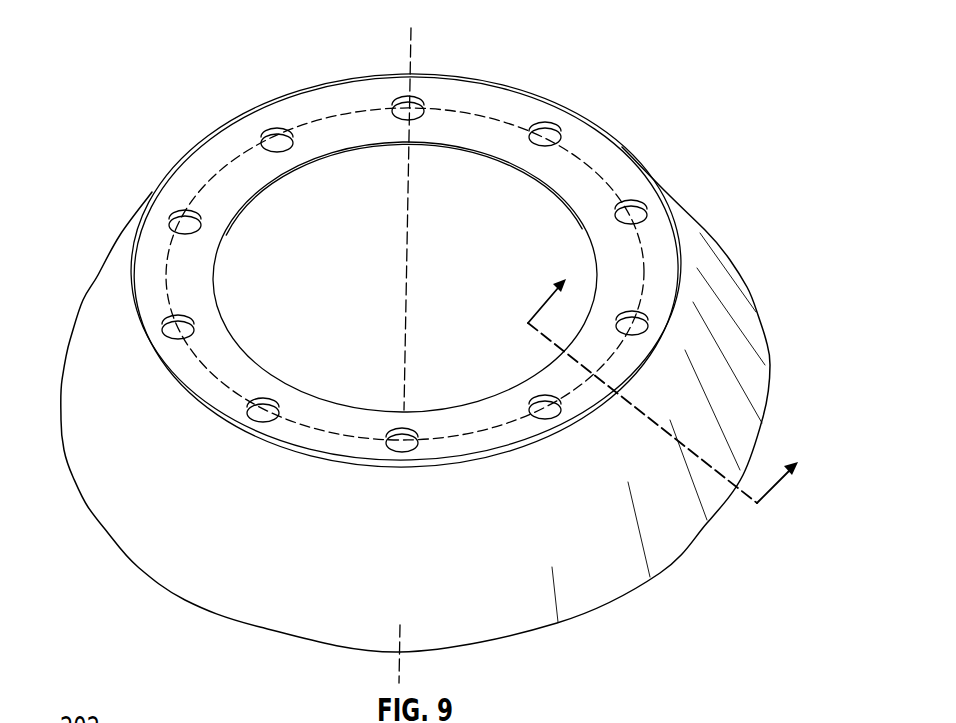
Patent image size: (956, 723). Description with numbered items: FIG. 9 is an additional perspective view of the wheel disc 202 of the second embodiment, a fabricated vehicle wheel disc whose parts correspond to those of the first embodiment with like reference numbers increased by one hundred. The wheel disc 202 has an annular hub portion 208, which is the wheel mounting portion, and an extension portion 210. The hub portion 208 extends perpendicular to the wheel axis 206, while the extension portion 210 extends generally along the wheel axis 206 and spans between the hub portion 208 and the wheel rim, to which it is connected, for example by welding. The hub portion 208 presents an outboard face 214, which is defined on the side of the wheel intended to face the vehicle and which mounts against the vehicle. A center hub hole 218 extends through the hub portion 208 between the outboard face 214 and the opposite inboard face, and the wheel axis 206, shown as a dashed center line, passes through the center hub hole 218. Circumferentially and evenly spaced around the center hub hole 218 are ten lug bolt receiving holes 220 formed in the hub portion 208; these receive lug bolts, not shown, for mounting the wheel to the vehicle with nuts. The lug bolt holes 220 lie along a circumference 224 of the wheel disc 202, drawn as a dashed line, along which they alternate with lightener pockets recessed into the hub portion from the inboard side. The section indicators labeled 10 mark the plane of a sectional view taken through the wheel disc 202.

The wheel disc 202 is at (122, 169).
The wheel axis 206 is at (414, 52).
The hub portion 208 is at (632, 158).
The extension portion 210 is at (749, 358).
The outboard face 214 is at (540, 110).
The center hub hole 218 is at (387, 270).
The lug bolt receiving holes 220 is at (647, 210).
The circumference 224 is at (342, 118).
The section line 10- 10 is at (672, 375).